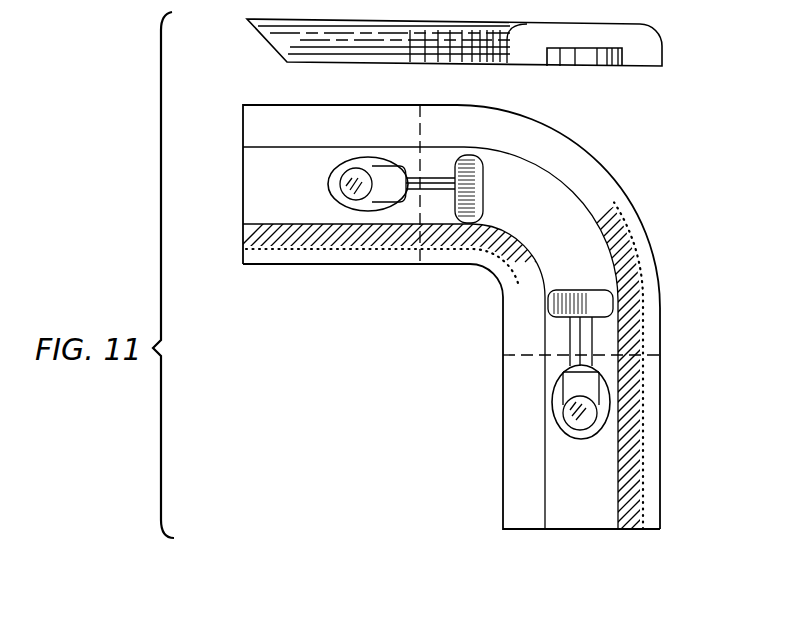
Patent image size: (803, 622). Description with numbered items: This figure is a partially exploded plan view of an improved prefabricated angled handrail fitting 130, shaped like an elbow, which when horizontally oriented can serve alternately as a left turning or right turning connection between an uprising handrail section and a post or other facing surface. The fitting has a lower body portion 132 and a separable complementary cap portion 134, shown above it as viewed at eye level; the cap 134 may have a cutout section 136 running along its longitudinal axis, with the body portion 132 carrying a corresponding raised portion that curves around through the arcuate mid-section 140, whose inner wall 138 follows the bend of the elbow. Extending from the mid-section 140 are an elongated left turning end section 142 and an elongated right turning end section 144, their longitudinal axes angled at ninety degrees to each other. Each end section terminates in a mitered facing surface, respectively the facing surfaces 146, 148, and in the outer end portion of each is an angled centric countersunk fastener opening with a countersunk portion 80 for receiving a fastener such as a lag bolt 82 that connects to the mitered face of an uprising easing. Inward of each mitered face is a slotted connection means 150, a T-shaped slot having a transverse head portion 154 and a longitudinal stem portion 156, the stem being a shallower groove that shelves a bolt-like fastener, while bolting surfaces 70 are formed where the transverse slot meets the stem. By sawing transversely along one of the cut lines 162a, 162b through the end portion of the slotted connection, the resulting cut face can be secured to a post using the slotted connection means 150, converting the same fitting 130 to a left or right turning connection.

The bolting surfaces 70 is at (470, 157).
The countersunk portion 80 is at (372, 159).
The lag bolt 82 is at (360, 198).
The angled handrail fitting 130 is at (424, 344).
The lower body portion 132 is at (270, 99).
The cap portion 134 is at (266, 19).
The cutout section 136 is at (583, 58).
The inner wall 138 is at (555, 178).
The arcuate mid-section 140 is at (610, 175).
The left turning end section 142 is at (498, 462).
The right turning end section 144 is at (290, 266).
The mitered facing surface 146 is at (513, 533).
The mitered facing surface 148 is at (243, 180).
The slotted connection means 150 is at (489, 199).
The transverse head portion 154 is at (468, 177).
The longitudinal stem portion 156 is at (584, 341).
The cut line 162a is at (500, 355).
The cut line 162b is at (418, 266).